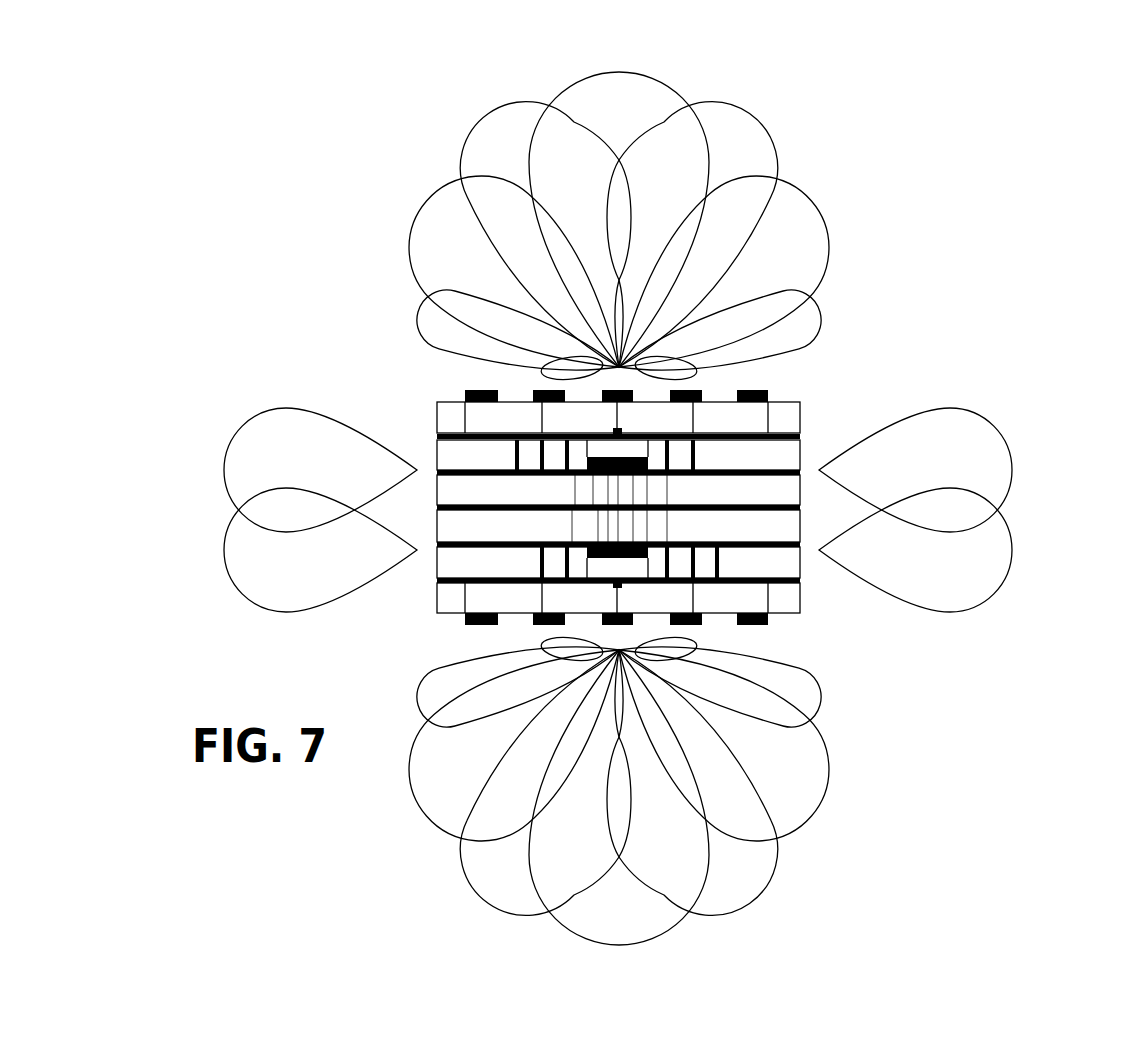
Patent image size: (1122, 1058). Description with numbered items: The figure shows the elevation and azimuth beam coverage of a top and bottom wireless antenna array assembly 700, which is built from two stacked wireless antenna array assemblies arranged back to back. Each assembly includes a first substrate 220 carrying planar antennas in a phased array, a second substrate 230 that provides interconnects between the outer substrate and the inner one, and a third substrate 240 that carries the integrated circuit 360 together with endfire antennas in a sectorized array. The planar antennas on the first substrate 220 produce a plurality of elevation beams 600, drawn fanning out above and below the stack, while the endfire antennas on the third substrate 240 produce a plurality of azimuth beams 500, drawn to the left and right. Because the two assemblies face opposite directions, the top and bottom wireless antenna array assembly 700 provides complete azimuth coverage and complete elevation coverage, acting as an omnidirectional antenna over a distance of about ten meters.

The first substrate 220 is at (442, 405).
The second substrate 230 is at (437, 443).
The third substrate 240 is at (440, 490).
The integrated circuit 360 is at (660, 543).
The azimuth beams 500 is at (260, 467).
The elevation beams 600 is at (587, 92).
The top and bottom wireless antenna array assembly 700 is at (615, 504).